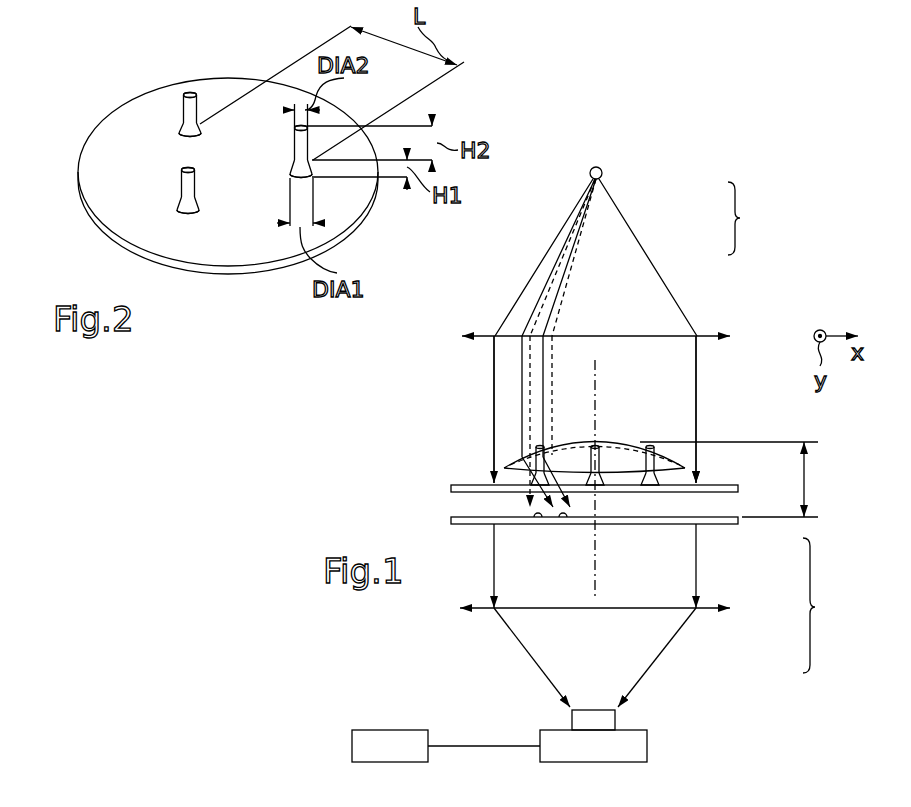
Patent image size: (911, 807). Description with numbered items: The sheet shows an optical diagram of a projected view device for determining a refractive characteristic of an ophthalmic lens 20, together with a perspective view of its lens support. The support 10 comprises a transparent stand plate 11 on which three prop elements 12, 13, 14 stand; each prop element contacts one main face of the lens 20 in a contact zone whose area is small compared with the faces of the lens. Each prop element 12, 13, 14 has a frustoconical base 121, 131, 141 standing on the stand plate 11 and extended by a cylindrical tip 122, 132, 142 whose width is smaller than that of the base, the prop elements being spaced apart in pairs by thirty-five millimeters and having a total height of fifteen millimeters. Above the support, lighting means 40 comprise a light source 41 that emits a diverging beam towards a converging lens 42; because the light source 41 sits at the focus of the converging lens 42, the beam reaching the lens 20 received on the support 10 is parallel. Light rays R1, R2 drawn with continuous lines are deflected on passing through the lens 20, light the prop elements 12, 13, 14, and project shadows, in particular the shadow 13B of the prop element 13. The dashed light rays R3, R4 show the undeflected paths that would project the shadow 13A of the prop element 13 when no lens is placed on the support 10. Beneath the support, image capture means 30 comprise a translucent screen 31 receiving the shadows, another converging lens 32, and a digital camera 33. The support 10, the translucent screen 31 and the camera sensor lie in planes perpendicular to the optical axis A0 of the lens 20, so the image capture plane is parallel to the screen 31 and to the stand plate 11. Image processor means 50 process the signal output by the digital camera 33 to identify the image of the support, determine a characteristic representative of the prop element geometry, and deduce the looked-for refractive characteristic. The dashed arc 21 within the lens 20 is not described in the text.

In FIG. 2, the support 10 is at (225, 246).
In FIG. 1, the support 10 is at (742, 488).
In FIG. 2, the transparent stand plate 11 is at (110, 137).
In FIG. 1, the transparent stand plate 11 is at (472, 486).
In FIG. 2, the prop element 12 is at (308, 147).
In FIG. 1, the prop element 12 is at (648, 445).
In FIG. 2, the prop element 13 is at (198, 104).
In FIG. 1, the prop element 13 is at (545, 455).
In FIG. 2, the prop element 14 is at (182, 185).
In FIG. 1, the prop element 14 is at (597, 460).
In FIG. 2, the base 121 is at (296, 167).
In FIG. 2, the tip 122 is at (296, 131).
In FIG. 2, the base 131 is at (183, 126).
In FIG. 2, the tip 132 is at (189, 92).
In FIG. 2, the base 141 is at (195, 207).
In FIG. 2, the tip 142 is at (187, 172).
In FIG. 1, the ophthalmic lens 20 is at (680, 453).
In FIG. 1, the lens inner surface 21 is at (663, 452).
In FIG. 1, the image capture means 30 is at (827, 605).
In FIG. 1, the translucent screen 31 is at (740, 526).
In FIG. 1, the converging lens 32 is at (710, 610).
In FIG. 1, the digital camera 33 is at (647, 746).
In FIG. 1, the lighting means 40 is at (752, 218).
In FIG. 1, the light source 41 is at (602, 169).
In FIG. 1, the converging lens 42 is at (716, 336).
In FIG. 1, the image processor means 50 is at (388, 740).
In FIG. 1, the shadow 13A is at (532, 524).
In FIG. 1, the shadow 13B is at (565, 525).
In FIG. 1, the light ray R1 is at (522, 368).
In FIG. 1, the light ray R2 is at (543, 395).
In FIG. 1, the light ray R3 is at (530, 348).
In FIG. 1, the light ray R4 is at (552, 348).
In FIG. 1, the optical axis A0 is at (597, 565).